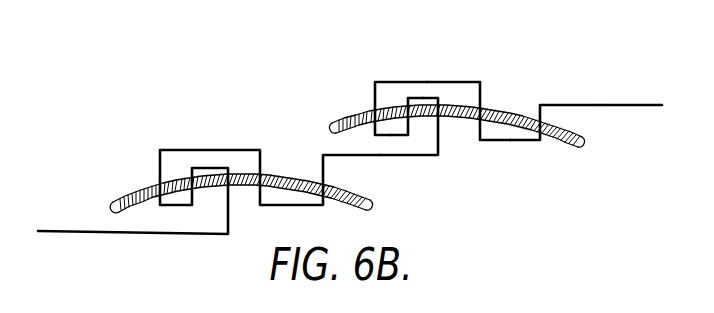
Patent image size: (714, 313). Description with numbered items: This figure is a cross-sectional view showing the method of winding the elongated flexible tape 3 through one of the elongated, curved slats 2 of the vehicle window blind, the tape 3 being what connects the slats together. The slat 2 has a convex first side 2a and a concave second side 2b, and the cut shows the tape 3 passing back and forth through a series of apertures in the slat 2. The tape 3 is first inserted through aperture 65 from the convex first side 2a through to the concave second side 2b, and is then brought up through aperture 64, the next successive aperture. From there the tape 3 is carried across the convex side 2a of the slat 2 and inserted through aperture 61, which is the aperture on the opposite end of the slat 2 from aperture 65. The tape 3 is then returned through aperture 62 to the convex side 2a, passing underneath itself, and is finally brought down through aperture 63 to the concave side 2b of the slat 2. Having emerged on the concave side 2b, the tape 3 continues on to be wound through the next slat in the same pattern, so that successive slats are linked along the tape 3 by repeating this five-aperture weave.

The slat 2 is at (341, 121).
The convex first side 2a is at (570, 135).
The concave second side 2b is at (565, 150).
The elongated flexible tape 3 is at (640, 105).
The aperture 61 is at (365, 108).
The aperture 62 is at (405, 103).
The aperture 63 is at (448, 102).
The aperture 64 is at (490, 103).
The aperture 65 is at (537, 108).